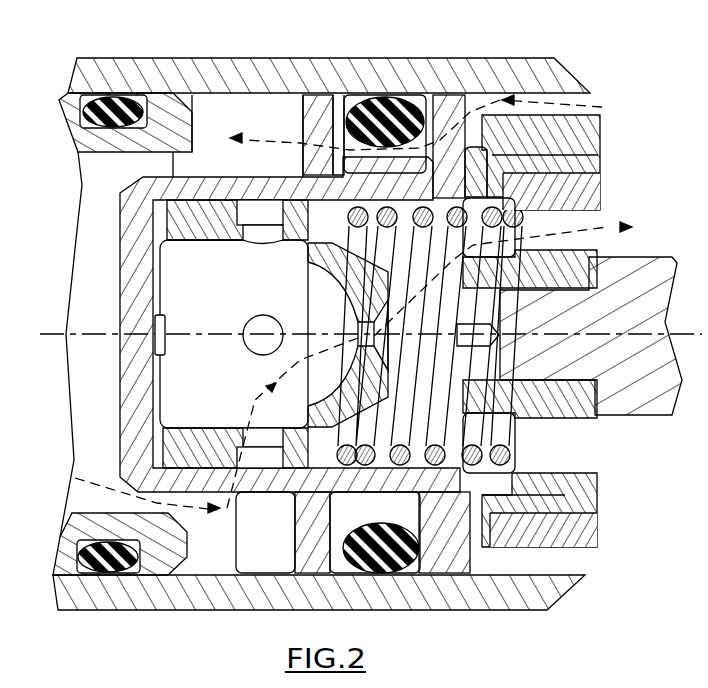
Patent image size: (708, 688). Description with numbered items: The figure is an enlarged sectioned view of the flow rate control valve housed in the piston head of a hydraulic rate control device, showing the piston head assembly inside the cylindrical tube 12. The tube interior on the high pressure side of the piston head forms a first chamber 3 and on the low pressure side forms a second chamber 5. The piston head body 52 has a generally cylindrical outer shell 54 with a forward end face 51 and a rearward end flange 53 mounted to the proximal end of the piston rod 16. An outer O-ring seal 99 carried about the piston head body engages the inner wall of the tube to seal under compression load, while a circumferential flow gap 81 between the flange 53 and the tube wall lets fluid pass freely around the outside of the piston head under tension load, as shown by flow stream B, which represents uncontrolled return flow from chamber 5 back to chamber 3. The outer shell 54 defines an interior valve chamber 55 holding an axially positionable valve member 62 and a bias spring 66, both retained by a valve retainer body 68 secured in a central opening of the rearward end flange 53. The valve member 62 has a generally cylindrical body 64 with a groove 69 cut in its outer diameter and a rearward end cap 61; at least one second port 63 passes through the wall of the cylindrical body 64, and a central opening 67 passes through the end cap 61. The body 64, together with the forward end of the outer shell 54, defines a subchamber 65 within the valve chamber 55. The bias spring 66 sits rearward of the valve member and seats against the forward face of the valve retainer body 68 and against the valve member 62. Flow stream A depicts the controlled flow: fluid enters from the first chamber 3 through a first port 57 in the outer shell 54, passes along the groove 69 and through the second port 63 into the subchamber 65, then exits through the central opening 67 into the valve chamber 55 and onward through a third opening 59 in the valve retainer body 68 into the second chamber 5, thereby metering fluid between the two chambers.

The cylindrical tube 12 is at (297, 58).
The outer O-ring seal 99 is at (408, 95).
The circumferential flow gap 81 is at (468, 95).
The flow stream B is at (607, 107).
The rearward end flange 53 is at (600, 117).
The second chamber 5 is at (665, 186).
The third opening 59 is at (594, 222).
The valve retainer body 68 is at (594, 252).
The piston rod 16 is at (625, 415).
The bias spring 66 is at (506, 428).
The valve chamber 55 is at (364, 493).
The first port 57 is at (246, 430).
The flow stream A is at (64, 467).
The piston head body 52 is at (104, 380).
The first chamber 3 is at (55, 319).
The forward end face 51 is at (120, 276).
The groove 69 is at (273, 212).
The outer shell 54 is at (253, 175).
The valve member 62 is at (207, 252).
The second port 63 is at (260, 240).
The subchamber 65 is at (214, 321).
The rearward end cap 61 is at (306, 280).
The central opening 67 is at (357, 330).
The cylindrical body 64 is at (168, 428).